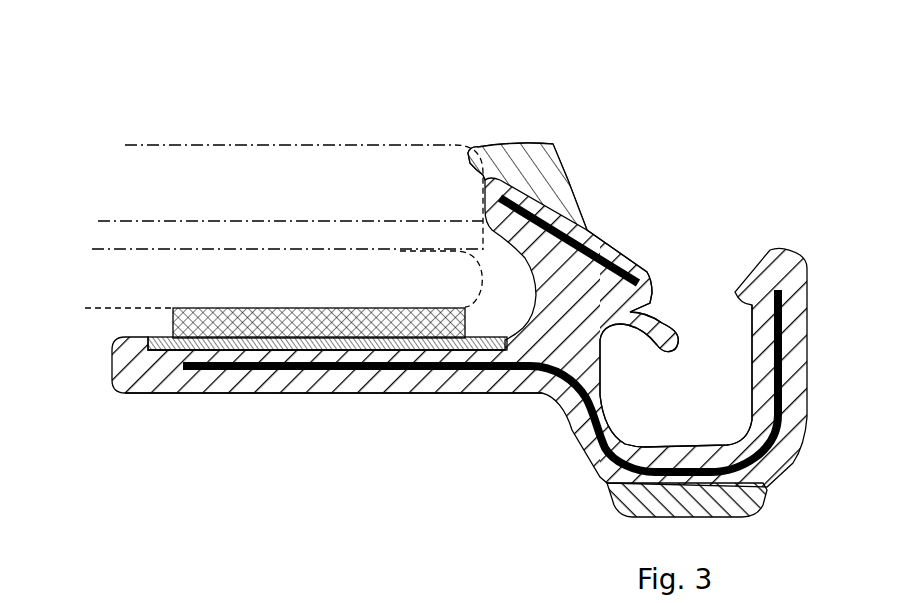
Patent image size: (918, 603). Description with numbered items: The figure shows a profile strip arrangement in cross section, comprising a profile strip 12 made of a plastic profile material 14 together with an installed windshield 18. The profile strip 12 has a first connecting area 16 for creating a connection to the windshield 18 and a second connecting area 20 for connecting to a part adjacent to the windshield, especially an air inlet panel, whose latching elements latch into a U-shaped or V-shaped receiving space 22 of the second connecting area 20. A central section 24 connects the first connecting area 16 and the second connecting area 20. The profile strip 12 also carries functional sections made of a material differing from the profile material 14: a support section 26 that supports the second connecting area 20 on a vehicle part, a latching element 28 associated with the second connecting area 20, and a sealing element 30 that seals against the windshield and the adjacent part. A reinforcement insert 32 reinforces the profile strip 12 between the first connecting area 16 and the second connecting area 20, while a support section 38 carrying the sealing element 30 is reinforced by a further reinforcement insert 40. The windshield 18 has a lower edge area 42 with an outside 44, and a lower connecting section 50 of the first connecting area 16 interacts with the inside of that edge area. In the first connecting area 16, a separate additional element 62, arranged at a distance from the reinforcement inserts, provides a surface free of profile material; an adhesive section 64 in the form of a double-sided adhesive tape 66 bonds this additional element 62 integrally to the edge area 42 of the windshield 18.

The profile strip 12 is at (447, 438).
The profile material 14 is at (324, 383).
The first connecting area 16 is at (657, 123).
The windshield 18 is at (273, 183).
The second connecting area 20 is at (722, 237).
The receiving space 22 is at (691, 426).
The central section 24 is at (542, 405).
The support section 26 is at (740, 507).
The latching element 28 is at (655, 328).
The sealing element 30 is at (540, 153).
The reinforcement insert 32 is at (400, 370).
The support section 38 is at (593, 247).
The reinforcement insert 40 is at (620, 263).
The lower edge area 42 is at (402, 108).
The outside 44 is at (427, 135).
The lower connecting section 50 is at (197, 412).
The additional element 62 is at (155, 337).
The adhesive section 64 is at (355, 285).
The double-sided adhesive tape 66 is at (275, 318).